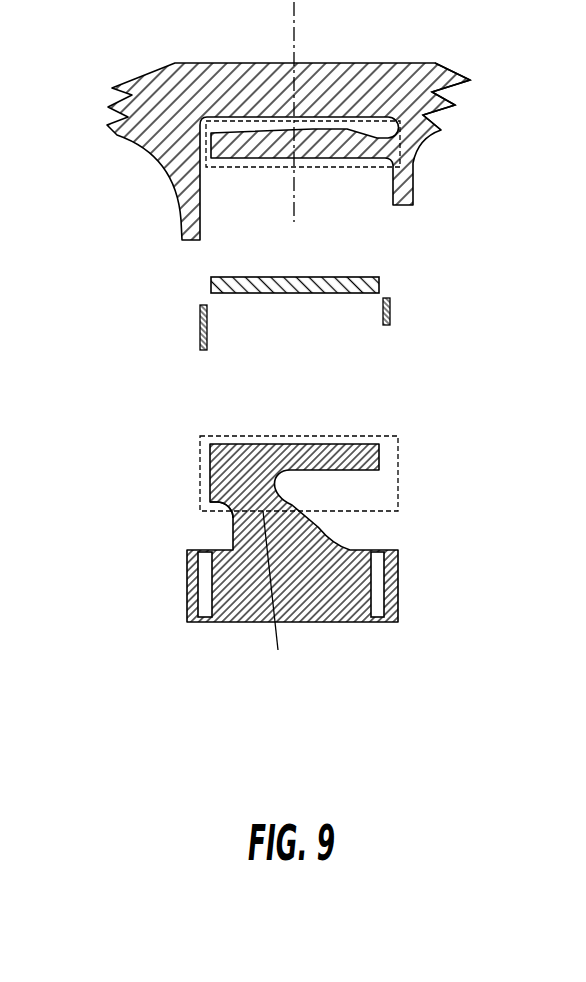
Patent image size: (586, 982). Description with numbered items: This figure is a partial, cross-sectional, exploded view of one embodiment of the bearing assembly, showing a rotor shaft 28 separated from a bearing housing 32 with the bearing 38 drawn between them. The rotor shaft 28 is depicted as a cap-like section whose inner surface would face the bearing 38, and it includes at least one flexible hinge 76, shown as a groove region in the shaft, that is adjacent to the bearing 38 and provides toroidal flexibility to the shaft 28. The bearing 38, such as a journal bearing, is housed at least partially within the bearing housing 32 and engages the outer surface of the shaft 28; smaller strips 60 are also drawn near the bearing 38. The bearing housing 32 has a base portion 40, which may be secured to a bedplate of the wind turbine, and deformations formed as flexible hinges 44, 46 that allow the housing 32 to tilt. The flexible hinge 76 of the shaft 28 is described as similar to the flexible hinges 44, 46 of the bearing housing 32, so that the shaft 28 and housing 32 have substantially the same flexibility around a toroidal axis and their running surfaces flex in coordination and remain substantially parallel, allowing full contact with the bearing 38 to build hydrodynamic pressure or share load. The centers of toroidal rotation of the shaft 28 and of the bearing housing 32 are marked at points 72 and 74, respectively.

The rotor shaft 28 is at (132, 75).
The center of toroidal rotation of the shaft 72 is at (422, 133).
The flexible hinge 76 is at (328, 168).
The bearing 38 is at (210, 287).
The strips 60 is at (392, 312).
The bearing housing 32 is at (232, 623).
The base portion 40 is at (315, 598).
The flexible hinge 44 is at (315, 492).
The flexible hinge 46 is at (218, 513).
The center of toroidal rotation of the bearing housing 74 is at (275, 600).